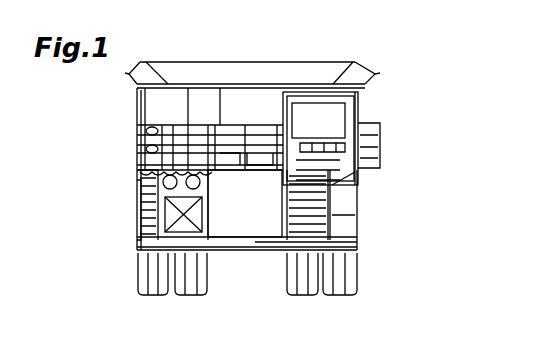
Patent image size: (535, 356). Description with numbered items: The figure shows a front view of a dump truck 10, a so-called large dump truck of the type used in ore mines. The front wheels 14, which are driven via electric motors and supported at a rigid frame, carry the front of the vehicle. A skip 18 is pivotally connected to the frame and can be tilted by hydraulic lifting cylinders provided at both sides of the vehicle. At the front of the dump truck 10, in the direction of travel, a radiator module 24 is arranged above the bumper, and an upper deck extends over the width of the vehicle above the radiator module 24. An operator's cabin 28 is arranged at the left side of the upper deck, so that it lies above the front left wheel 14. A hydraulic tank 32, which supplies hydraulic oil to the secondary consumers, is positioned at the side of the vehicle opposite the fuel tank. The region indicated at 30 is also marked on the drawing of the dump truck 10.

The dump truck 10 is at (246, 177).
The front wheels 14 is at (147, 285).
The skip 18 is at (316, 80).
The radiator module 24 is at (245, 217).
The operator's cabin 28 is at (338, 116).
The support column 30 is at (335, 213).
The hydraulic tank 32 is at (123, 212).